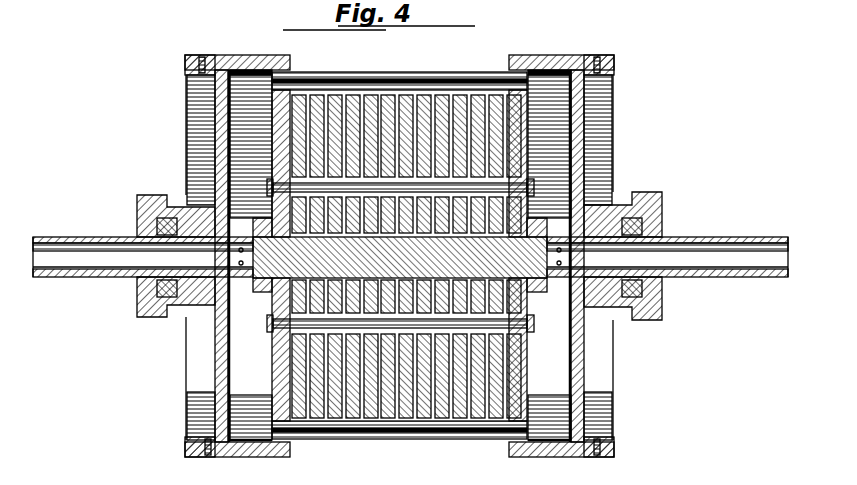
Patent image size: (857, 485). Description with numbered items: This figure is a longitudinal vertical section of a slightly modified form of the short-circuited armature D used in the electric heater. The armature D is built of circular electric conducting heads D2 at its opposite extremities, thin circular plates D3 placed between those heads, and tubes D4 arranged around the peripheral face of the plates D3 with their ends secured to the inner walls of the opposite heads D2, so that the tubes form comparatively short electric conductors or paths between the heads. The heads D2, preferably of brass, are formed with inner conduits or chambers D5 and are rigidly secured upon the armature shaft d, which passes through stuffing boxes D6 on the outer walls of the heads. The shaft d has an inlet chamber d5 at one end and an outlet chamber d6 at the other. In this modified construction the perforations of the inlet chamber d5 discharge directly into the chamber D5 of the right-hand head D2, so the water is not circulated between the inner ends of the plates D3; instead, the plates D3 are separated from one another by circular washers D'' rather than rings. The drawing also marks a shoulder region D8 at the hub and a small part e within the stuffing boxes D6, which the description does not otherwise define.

The armature D is at (399, 246).
The electric conducting head D2 is at (636, 132).
The thin circular plate D3 is at (369, 95).
The tube D4 is at (392, 455).
The inner conduit or chamber D5 is at (644, 94).
The stuffing box D6 is at (165, 204).
The hub shoulder D8 is at (276, 320).
The circular washer D'' is at (401, 260).
The bearing e is at (399, 257).
The armature shaft d is at (410, 244).
The inlet chamber d5 is at (410, 256).
The outlet chamber d6 is at (410, 256).